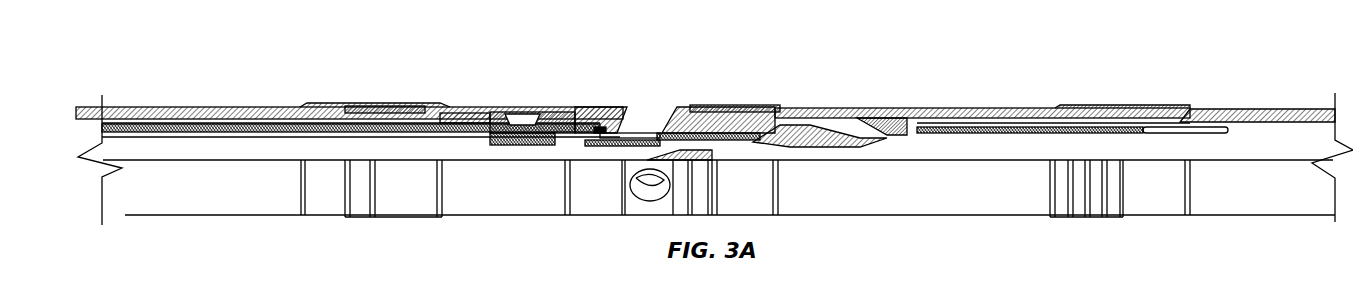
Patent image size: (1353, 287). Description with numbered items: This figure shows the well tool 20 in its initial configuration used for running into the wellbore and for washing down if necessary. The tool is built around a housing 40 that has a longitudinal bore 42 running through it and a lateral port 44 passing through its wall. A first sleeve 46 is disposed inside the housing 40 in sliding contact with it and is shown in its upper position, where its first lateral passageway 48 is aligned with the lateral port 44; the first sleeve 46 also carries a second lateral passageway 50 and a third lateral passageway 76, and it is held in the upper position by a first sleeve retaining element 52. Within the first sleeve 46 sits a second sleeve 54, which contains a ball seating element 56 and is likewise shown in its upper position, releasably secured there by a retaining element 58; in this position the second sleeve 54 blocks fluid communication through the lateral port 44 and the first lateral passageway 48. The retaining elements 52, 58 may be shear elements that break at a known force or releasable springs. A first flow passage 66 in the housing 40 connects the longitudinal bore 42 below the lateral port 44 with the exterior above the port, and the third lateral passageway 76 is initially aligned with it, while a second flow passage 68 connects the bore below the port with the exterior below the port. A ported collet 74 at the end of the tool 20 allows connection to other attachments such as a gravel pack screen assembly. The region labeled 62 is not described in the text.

The well tool 20 is at (282, 107).
The housing 40 is at (225, 107).
The longitudinal bore 42 is at (185, 145).
The lateral port 44 is at (645, 120).
The first sleeve 46 is at (308, 125).
The first lateral passageway 48 is at (650, 135).
The second lateral passageway 50 is at (467, 123).
The first sleeve retaining element 52 is at (537, 132).
The second sleeve 54 is at (610, 132).
The ball seating element 56 is at (602, 133).
The retaining element 58 is at (602, 137).
The recess 62 is at (500, 127).
The first flow passage 66 is at (365, 123).
The second flow passage 68 is at (938, 127).
The ported collet 74 is at (1185, 123).
The third lateral passageway 76 is at (878, 125).